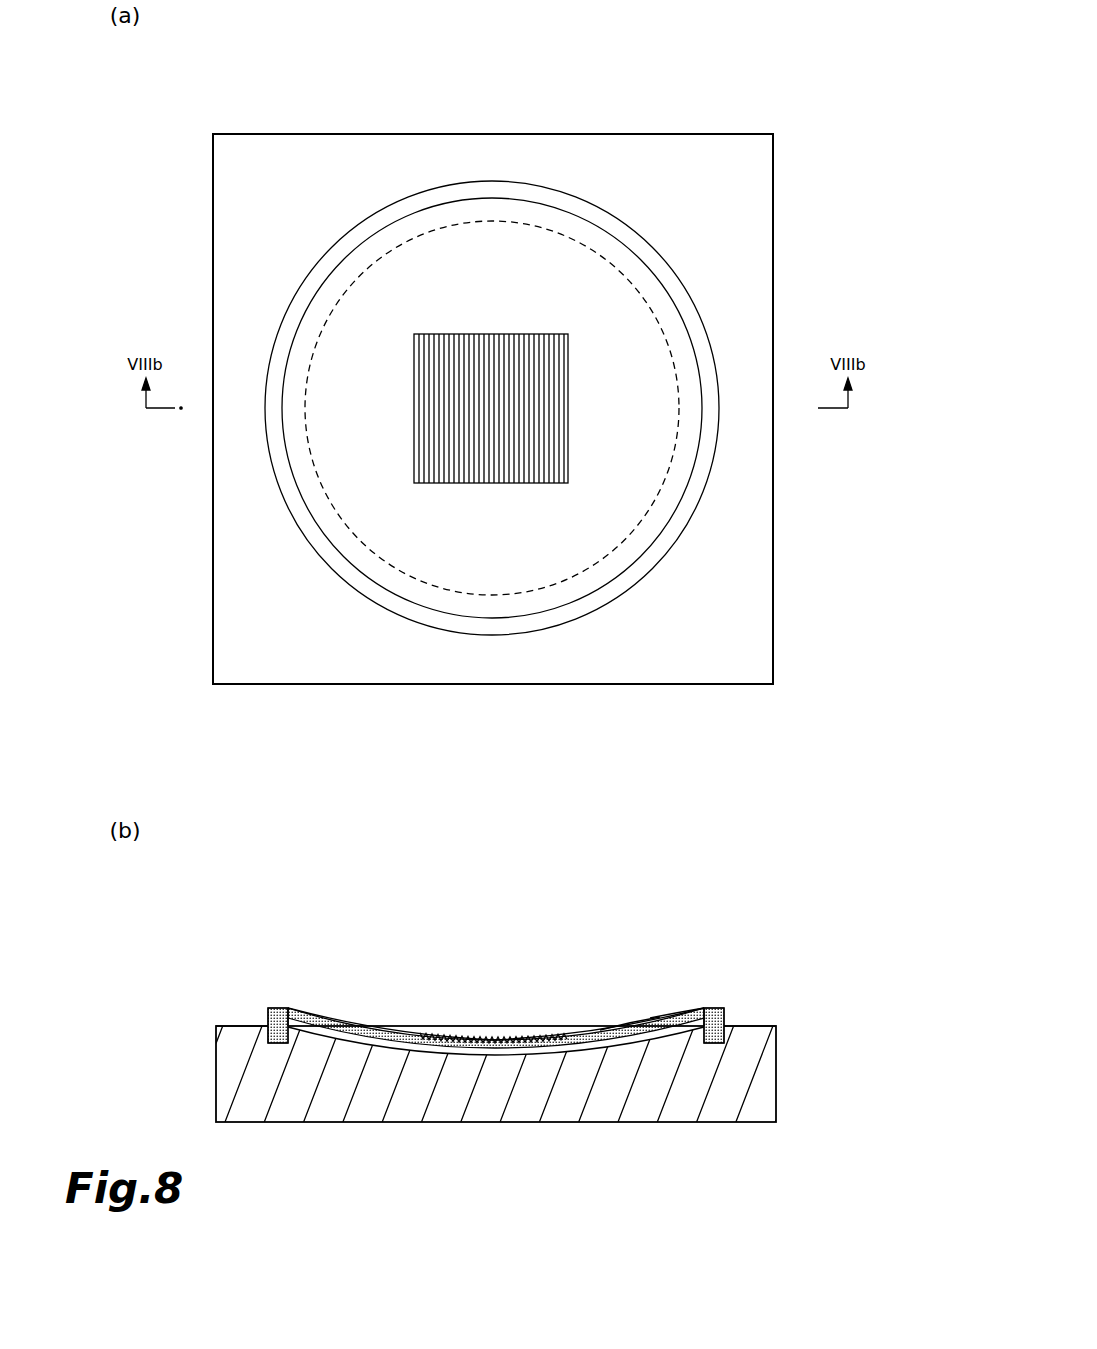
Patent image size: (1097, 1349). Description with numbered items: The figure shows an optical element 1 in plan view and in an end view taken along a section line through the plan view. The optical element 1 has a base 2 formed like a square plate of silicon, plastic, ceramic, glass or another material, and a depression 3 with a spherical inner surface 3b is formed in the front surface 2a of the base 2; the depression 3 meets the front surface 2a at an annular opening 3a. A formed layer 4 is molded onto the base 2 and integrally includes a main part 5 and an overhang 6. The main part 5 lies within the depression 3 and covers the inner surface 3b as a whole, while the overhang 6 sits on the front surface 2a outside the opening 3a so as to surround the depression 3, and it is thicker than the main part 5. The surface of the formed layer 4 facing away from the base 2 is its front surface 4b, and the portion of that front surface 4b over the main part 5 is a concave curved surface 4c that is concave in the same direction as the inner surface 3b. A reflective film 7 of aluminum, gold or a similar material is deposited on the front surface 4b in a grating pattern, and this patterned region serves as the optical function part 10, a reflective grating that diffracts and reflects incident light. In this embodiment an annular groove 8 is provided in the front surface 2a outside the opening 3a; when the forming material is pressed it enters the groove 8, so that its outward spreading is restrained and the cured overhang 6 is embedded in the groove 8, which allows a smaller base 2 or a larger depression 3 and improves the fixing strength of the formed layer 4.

The optical element 1 is at (706, 76).
The base 2 is at (774, 638).
The front surface 2a is at (715, 648).
The depression 3 is at (314, 500).
The annular opening 3a is at (402, 245).
The inner surface 3b is at (413, 538).
The formed layer 4 is at (310, 266).
The front surface of the formed layer 4b is at (687, 513).
The curved surface 4c is at (635, 415).
The main part 5 is at (580, 547).
The overhang 6 is at (523, 627).
The reflective film 7 is at (468, 566).
The groove 8 is at (696, 324).
The optical function part 10 is at (453, 408).